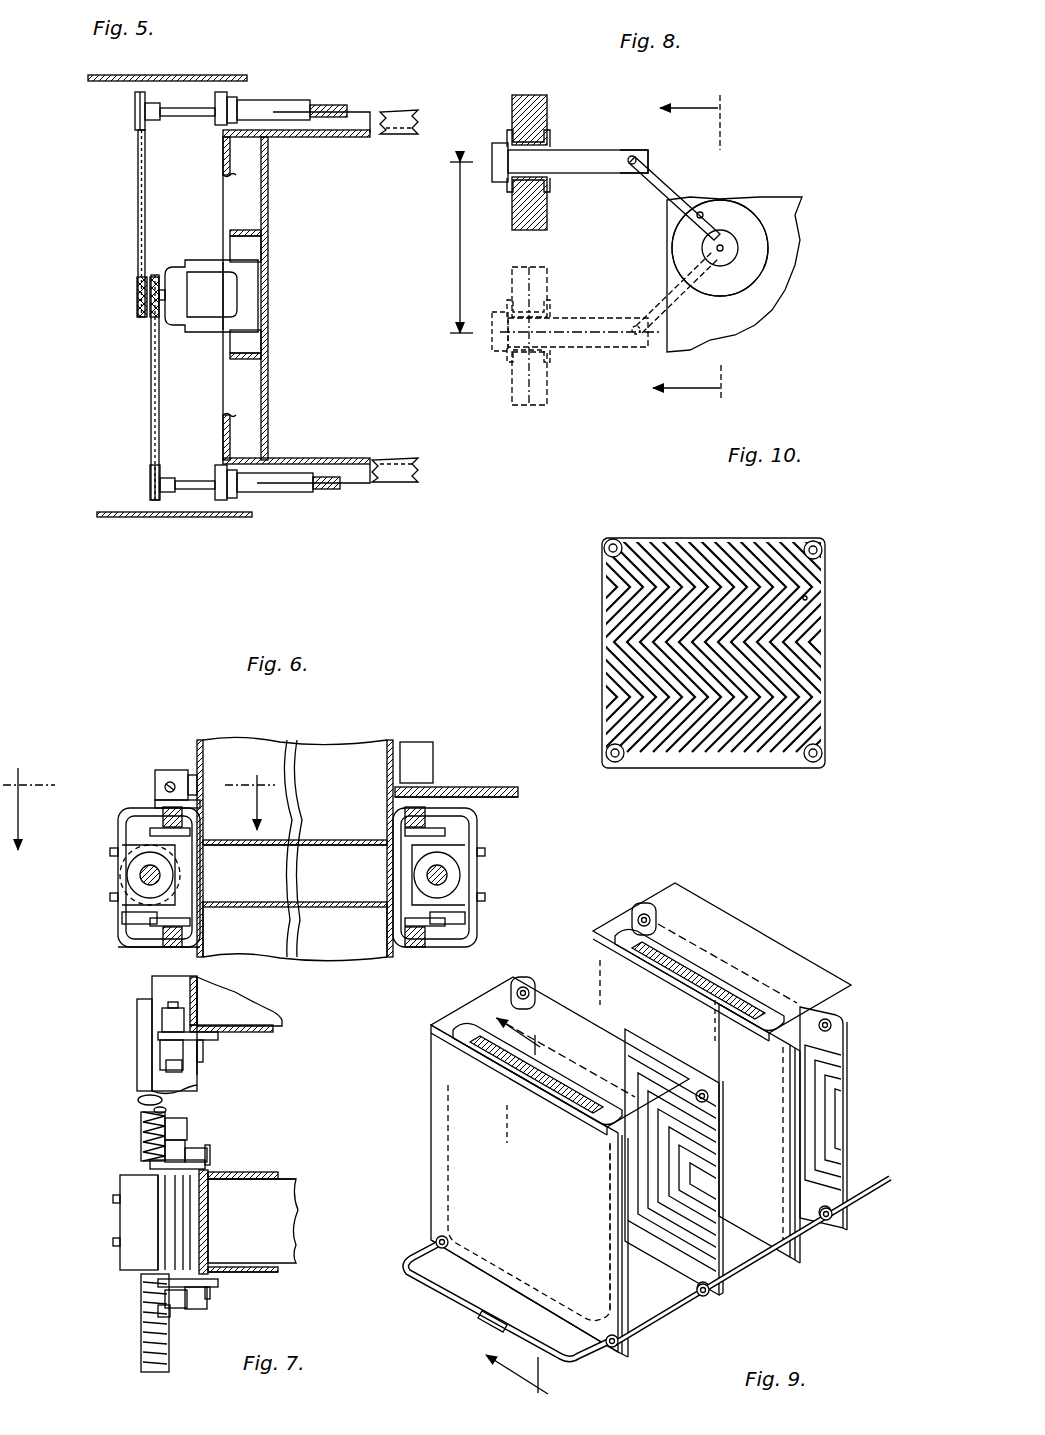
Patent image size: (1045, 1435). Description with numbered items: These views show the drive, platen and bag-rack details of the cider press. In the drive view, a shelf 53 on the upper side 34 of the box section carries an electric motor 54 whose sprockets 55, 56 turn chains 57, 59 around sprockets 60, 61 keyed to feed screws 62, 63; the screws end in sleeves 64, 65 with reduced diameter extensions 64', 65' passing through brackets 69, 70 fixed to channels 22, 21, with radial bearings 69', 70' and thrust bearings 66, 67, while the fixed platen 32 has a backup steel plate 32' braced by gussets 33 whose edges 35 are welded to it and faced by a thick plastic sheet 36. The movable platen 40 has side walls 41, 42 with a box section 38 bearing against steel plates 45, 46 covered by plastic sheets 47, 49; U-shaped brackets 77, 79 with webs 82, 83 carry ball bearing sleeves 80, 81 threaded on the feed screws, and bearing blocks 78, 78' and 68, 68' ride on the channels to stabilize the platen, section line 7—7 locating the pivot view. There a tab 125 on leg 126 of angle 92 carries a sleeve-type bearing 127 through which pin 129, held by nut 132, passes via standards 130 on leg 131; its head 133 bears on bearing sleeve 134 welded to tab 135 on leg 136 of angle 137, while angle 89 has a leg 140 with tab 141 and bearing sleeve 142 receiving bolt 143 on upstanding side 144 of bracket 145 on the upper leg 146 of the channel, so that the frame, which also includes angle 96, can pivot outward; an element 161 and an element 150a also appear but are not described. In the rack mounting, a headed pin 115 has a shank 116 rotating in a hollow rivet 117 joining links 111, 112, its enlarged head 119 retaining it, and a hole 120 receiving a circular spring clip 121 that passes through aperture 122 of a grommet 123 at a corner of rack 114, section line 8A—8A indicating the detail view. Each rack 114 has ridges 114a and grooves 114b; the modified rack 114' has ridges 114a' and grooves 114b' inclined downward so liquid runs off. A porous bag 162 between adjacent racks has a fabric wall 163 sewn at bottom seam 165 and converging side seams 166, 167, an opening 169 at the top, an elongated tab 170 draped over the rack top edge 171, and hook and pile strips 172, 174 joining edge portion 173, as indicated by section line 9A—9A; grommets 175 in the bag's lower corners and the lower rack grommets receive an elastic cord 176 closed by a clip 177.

In FIG. 5, the channel 21 is at (412, 110).
In FIG. 6, the channel 21 is at (462, 922).
In FIG. 5, the channel 22 is at (405, 483).
In FIG. 6, the channel 22 is at (122, 923).
In FIG. 7, the channel 22 is at (197, 980).
In FIG. 5, the fixed platen 32 is at (204, 298).
In FIG. 7, the fixed platen 32 is at (259, 1030).
In FIG. 5, the backup steel plate 32' is at (214, 329).
In FIG. 5, the gussets 33 is at (240, 230).
In FIG. 5, the upper side of box section 34 is at (255, 247).
In FIG. 5, the gusset edges 35 is at (262, 352).
In FIG. 5, the thick plastic sheet 36 is at (268, 191).
In FIG. 7, the thick plastic sheet 36 is at (268, 1050).
In FIG. 6, the box section 38 is at (312, 840).
In FIG. 7, the box section 38 is at (290, 1208).
In FIG. 6, the movable platen 40 is at (393, 740).
In FIG. 7, the movable platen 40 is at (296, 1236).
In FIG. 6, the side wall 41 is at (388, 740).
In FIG. 6, the side wall 42 is at (218, 740).
In FIG. 7, the side wall 42 is at (208, 1234).
In FIG. 6, the steel plate 45 is at (290, 745).
In FIG. 7, the steel plate 45 is at (280, 1270).
In FIG. 7, the steel plate 46 is at (280, 1172).
In FIG. 7, the thick plastic sheet 47 is at (272, 1275).
In FIG. 7, the thick plastic sheet 49 is at (270, 1165).
In FIG. 5, the shelf 53 is at (258, 294).
In FIG. 5, the electric motor 54 is at (228, 307).
In FIG. 5, the sprocket 55 is at (162, 285).
In FIG. 5, the sprocket 56 is at (137, 318).
In FIG. 5, the chain 57 is at (150, 384).
In FIG. 5, the chain 59 is at (137, 191).
In FIG. 5, the sprocket 60 is at (150, 472).
In FIG. 5, the sprocket 61 is at (135, 112).
In FIG. 5, the feed screw 62 is at (330, 490).
In FIG. 6, the feed screw 62 is at (135, 875).
In FIG. 7, the feed screw 62 is at (140, 1100).
In FIG. 5, the feed screw 63 is at (333, 104).
In FIG. 6, the feed screw 63 is at (460, 870).
In FIG. 5, the sleeve 64 is at (275, 507).
In FIG. 7, the sleeve 64 is at (110, 1057).
In FIG. 5, the reduced diameter extension 64' is at (187, 458).
In FIG. 5, the sleeve 65 is at (283, 89).
In FIG. 5, the reduced diameter extension 65' is at (180, 131).
In FIG. 5, the thrust bearing 66 is at (232, 500).
In FIG. 5, the thrust bearing 67 is at (238, 108).
In FIG. 6, the bearing block 68 is at (135, 873).
In FIG. 6, the bearing block 68' is at (231, 932).
In FIG. 5, the bracket 69 is at (296, 443).
In FIG. 5, the radial bearing 69' is at (174, 532).
In FIG. 5, the bracket 70 is at (296, 147).
In FIG. 5, the radial bearing 70' is at (167, 72).
In FIG. 6, the U-shaped bracket 77 is at (480, 815).
In FIG. 6, the bearing block 78 is at (384, 873).
In FIG. 6, the bearing block 78' is at (358, 932).
In FIG. 6, the U-shaped bracket 79 is at (122, 945).
In FIG. 7, the U-shaped bracket 79 is at (128, 1222).
In FIG. 6, the ball bearing sleeve 80 is at (460, 895).
In FIG. 6, the ball bearing sleeve 81 is at (130, 895).
In FIG. 6, the web 82 is at (477, 838).
In FIG. 6, the web 83 is at (110, 852).
In FIG. 7, the web 83 is at (158, 1262).
In FIG. 7, the angle 89 is at (205, 1060).
In FIG. 7, the angle 92 is at (212, 1125).
In FIG. 7, the angle 96 is at (210, 1150).
In FIG. 8, the elongated link 111 is at (547, 219).
In FIG. 8, the elongated link 112 is at (514, 220).
In FIG. 8, the rack 114 is at (753, 251).
In FIG. 9, the rack 114 is at (766, 1151).
In FIG. 10, the modified rack 114' is at (670, 653).
In FIG. 9, the ridges 114a is at (815, 1117).
In FIG. 10, the ridges 114a' is at (680, 619).
In FIG. 9, the grooves 114b is at (772, 1152).
In FIG. 10, the grooves 114b' is at (832, 703).
In FIG. 8, the headed pin 115 is at (600, 150).
In FIG. 8, the shank 116 is at (575, 175).
In FIG. 8, the hollow rivet 117 is at (550, 138).
In FIG. 8, the enlarged head 119 is at (492, 145).
In FIG. 8, the hole 120 is at (622, 152).
In FIG. 8, the circular spring clip 121 is at (690, 195).
In FIG. 8, the aperture 122 is at (740, 250).
In FIG. 8, the grommet 123 is at (760, 272).
In FIG. 10, the grommet 123 is at (604, 548).
In FIG. 9, the grommet 123 is at (510, 990).
In FIG. 6, the tab 125 is at (188, 770).
In FIG. 7, the tab 125 is at (150, 1162).
In FIG. 7, the leg 126 is at (210, 1160).
In FIG. 7, the sleeve-type bearing 127 is at (158, 1140).
In FIG. 6, the pin 129 is at (165, 785).
In FIG. 7, the pin 129 is at (165, 1203).
In FIG. 6, the standards 130 is at (160, 770).
In FIG. 7, the standards 130 is at (130, 1178).
In FIG. 6, the leg 131 is at (155, 800).
In FIG. 7, the leg 131 is at (130, 1235).
In FIG. 7, the nut 132 is at (143, 1120).
In FIG. 7, the head 133 is at (143, 1320).
In FIG. 7, the bearing sleeve 134 is at (158, 1305).
In FIG. 7, the tab 135 is at (158, 1290).
In FIG. 7, the leg 136 is at (210, 1290).
In FIG. 7, the angle 137 is at (205, 1300).
In FIG. 7, the leg 140 is at (215, 1042).
In FIG. 7, the tab 141 is at (152, 1035).
In FIG. 7, the bearing sleeve 142 is at (145, 1056).
In FIG. 7, the bolt 143 is at (152, 1075).
In FIG. 7, the upstanding side 144 is at (137, 1010).
In FIG. 7, the bracket 145 is at (152, 992).
In FIG. 7, the upper leg 146 is at (190, 1075).
In FIG. 6, the mounting plate 150a is at (500, 787).
In FIG. 6, the block 161 is at (418, 742).
In FIG. 6, the porous bag 162 is at (460, 787).
In FIG. 9, the porous bag 162 is at (530, 1199).
In FIG. 9, the fabric wall 163 is at (448, 1178).
In FIG. 9, the bottom seam 165 is at (535, 1265).
In FIG. 9, the side seam 166 is at (431, 1145).
In FIG. 9, the side seam 167 is at (608, 1216).
In FIG. 9, the opening 169 is at (496, 1060).
In FIG. 9, the elongated tab 170 is at (520, 995).
In FIG. 9, the top edge 171 is at (570, 1000).
In FIG. 9, the strip of hook and pile fastening 172 is at (560, 1092).
In FIG. 9, the edge portion 173 is at (455, 1040).
In FIG. 9, the strip of hook and pile fastener 174 is at (507, 1110).
In FIG. 9, the grommets 175 is at (435, 1240).
In FIG. 6, the elastic cord 176 is at (150, 832).
In FIG. 9, the elastic cord 176 is at (412, 1255).
In FIG. 9, the clip 177 is at (480, 1320).
In FIG. 6, the section line 7— 7 is at (139, 793).
In FIG. 8, the section line 8A— 8A is at (710, 250).
In FIG. 9, the section line 9A— 9A is at (537, 1212).